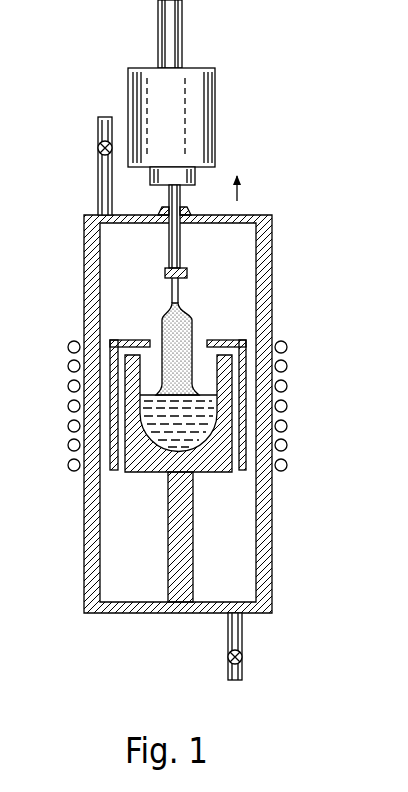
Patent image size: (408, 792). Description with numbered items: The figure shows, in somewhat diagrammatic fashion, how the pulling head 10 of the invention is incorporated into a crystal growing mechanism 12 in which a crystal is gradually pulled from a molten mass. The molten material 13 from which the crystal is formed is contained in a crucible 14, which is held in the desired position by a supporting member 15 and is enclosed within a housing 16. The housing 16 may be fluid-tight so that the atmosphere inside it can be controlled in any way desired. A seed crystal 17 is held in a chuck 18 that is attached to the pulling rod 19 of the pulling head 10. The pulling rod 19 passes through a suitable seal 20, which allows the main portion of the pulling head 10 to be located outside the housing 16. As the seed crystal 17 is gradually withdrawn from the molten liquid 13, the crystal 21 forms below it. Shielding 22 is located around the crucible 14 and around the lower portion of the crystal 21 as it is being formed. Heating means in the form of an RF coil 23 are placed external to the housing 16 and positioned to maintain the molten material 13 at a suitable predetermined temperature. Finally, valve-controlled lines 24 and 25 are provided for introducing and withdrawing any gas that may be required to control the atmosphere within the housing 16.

The pulling head 10 is at (223, 121).
The crystal growing mechanism 12 is at (133, 336).
The molten material 13 is at (148, 408).
The crucible 14 is at (155, 464).
The supporting member 15 is at (180, 533).
The housing 16 is at (98, 565).
The seed crystal 17 is at (180, 293).
The chuck 18 is at (188, 268).
The pulling rod 19 is at (181, 243).
The seal 20 is at (188, 211).
The crystal 21 is at (178, 321).
The shielding 22 is at (243, 341).
The RF coil 23 is at (288, 386).
The valve-controlled line 24 is at (102, 168).
The valve-controlled line 25 is at (228, 642).